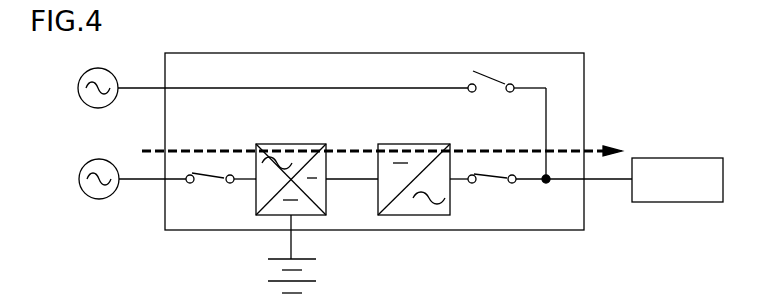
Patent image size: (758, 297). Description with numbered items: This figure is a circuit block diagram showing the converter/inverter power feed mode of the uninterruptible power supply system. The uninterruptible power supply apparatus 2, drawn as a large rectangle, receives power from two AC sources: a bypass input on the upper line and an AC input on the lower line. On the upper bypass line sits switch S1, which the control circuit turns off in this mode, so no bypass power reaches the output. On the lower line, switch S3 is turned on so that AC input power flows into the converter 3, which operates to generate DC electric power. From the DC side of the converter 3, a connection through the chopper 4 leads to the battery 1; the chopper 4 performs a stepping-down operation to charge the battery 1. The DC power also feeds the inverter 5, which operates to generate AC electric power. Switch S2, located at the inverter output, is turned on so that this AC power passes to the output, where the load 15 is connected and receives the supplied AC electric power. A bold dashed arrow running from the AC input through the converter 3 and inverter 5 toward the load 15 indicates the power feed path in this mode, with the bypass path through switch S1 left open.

The battery 1 is at (305, 258).
The uninterruptible power supply apparatus 2 is at (585, 67).
The converter 3 is at (297, 144).
The chopper 4 is at (272, 217).
The inverter 5 is at (424, 144).
The load 15 is at (680, 158).
The switch S1 is at (488, 88).
The switch S2 is at (488, 182).
The switch S3 is at (205, 182).